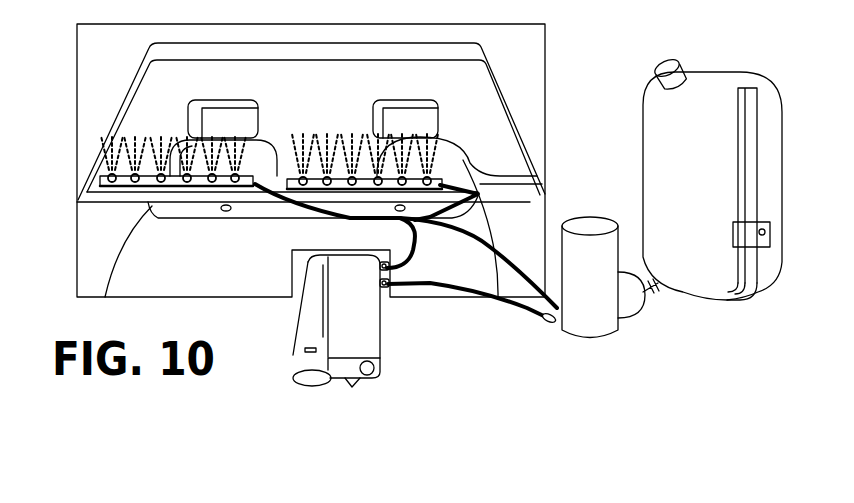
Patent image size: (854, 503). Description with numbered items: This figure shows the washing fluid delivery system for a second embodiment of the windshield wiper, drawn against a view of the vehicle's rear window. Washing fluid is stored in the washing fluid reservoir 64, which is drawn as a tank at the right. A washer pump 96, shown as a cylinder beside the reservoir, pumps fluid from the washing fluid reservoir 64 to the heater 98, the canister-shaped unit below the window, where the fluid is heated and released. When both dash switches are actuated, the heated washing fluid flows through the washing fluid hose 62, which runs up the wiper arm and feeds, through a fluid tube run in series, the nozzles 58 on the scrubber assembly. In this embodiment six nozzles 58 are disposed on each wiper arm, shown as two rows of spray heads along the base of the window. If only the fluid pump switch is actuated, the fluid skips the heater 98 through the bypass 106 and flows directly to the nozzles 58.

The nozzles 58 is at (110, 185).
The washing fluid hose 62 is at (447, 190).
The bypass 106 is at (488, 247).
The washing fluid reservoir 64 is at (768, 268).
The washer pump 96 is at (594, 340).
The heater 98 is at (312, 363).